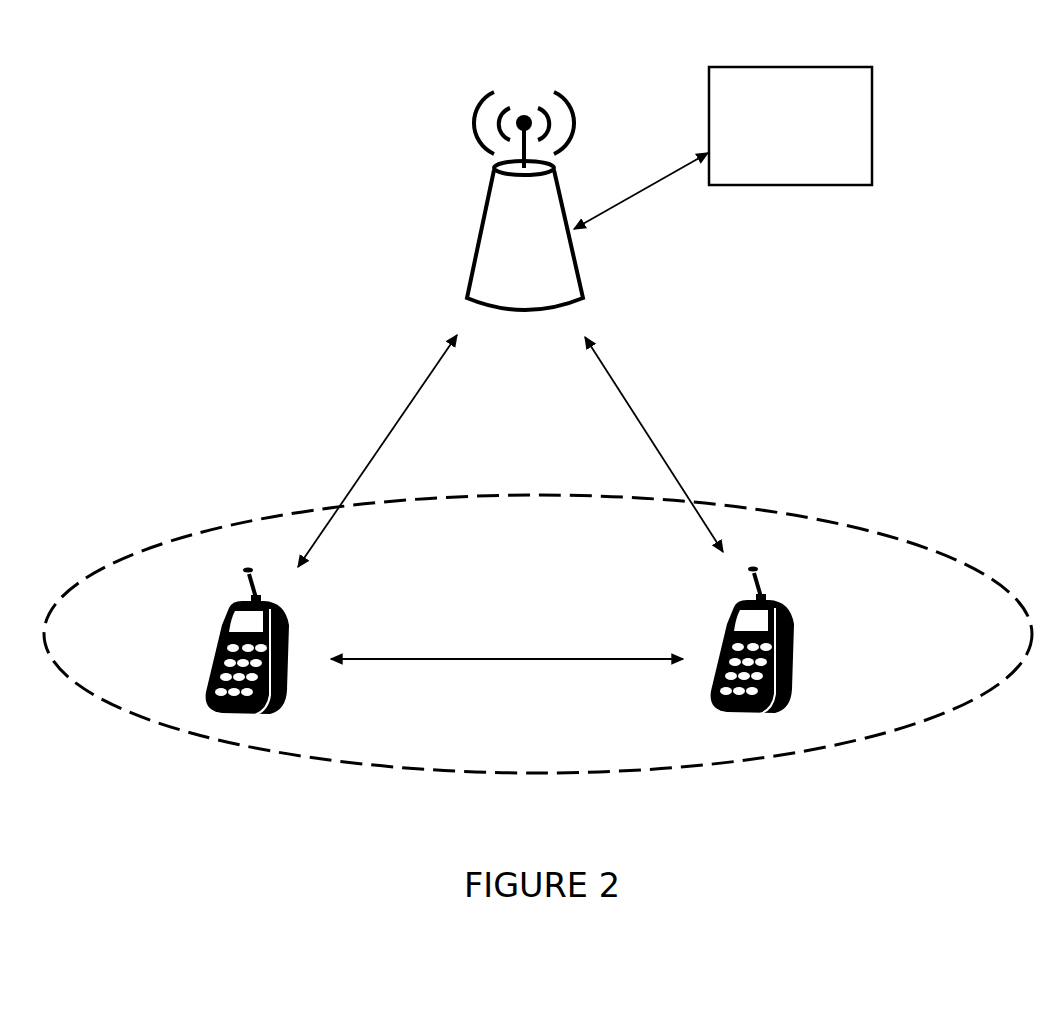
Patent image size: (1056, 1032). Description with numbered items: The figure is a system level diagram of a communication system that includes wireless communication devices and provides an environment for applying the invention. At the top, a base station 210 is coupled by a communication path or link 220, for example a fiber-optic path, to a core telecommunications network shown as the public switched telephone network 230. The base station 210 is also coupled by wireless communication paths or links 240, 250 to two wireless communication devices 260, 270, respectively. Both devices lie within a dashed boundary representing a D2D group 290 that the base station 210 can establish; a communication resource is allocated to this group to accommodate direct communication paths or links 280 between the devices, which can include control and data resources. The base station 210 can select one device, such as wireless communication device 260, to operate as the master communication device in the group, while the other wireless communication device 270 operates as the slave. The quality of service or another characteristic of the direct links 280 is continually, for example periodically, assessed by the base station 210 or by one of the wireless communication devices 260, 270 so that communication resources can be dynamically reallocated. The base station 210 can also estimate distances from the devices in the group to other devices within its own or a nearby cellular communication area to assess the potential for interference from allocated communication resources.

The base station 210 is at (525, 201).
The communication path or link 220 is at (641, 191).
The public switched telephone network (PSTN) 230 is at (790, 126).
The wireless communication path or link 240 is at (377, 451).
The wireless communication path or link 250 is at (654, 444).
The wireless communication device 260 is at (216, 624).
The wireless communication device 270 is at (806, 645).
The direct communication paths or links 280 is at (507, 640).
The D2D group 290 is at (538, 634).